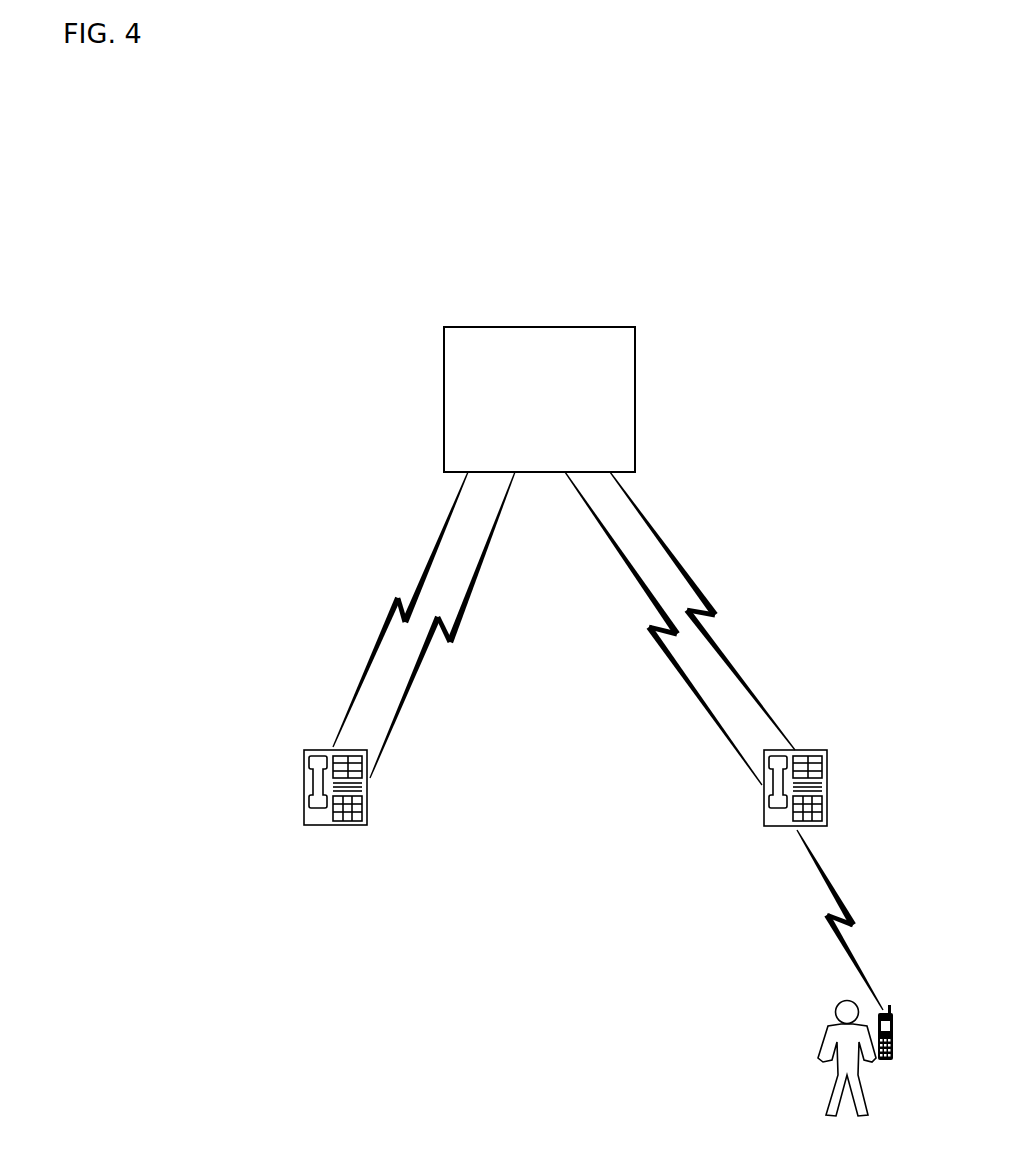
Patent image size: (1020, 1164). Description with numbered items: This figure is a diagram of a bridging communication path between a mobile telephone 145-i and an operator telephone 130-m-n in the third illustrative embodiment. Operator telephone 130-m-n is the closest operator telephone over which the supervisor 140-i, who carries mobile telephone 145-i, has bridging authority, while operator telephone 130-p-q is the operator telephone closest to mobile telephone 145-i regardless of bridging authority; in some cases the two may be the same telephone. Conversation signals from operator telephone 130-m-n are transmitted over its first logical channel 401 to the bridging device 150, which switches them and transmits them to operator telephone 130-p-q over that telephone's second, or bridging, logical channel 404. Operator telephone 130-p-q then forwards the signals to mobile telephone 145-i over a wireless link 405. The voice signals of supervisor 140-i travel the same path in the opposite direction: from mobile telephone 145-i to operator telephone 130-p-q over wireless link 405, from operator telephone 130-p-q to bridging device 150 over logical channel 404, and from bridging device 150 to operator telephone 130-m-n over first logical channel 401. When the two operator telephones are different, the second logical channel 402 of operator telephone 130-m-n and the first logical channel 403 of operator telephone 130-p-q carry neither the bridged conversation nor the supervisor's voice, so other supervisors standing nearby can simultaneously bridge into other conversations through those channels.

The bridging device 150 is at (539, 399).
The first logical channel 401 is at (458, 507).
The second logical channel 402 is at (482, 563).
The first logical channel 403 is at (623, 560).
The second logical channel 404 is at (678, 565).
The wireless link 405 is at (850, 957).
The operator telephone 130-m-n is at (323, 750).
The operator telephone 130-p-q is at (806, 750).
The supervisor 140-i is at (833, 1082).
The mobile telephone 145-i is at (906, 1058).